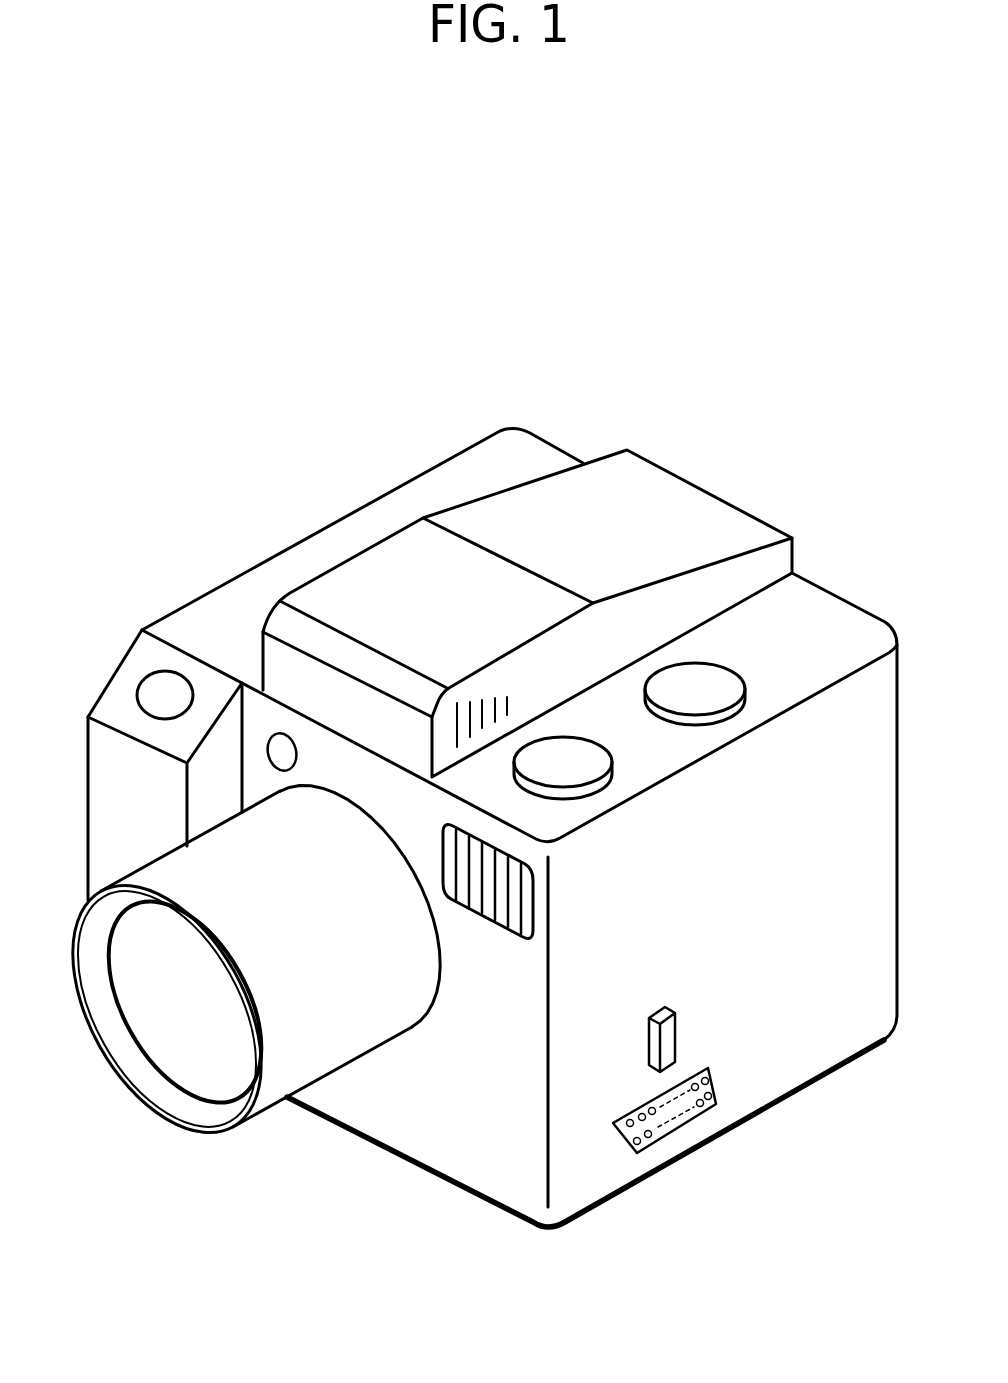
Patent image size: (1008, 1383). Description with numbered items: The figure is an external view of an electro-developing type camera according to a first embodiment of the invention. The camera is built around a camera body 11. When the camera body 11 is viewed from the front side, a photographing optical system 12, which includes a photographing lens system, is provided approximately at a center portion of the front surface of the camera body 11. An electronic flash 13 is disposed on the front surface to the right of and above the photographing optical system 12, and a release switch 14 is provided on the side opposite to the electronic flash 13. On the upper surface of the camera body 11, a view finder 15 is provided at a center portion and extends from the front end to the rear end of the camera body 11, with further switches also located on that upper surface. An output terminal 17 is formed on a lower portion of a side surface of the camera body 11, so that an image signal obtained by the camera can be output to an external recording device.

The camera body 11 is at (419, 1202).
The photographing optical system 12 is at (195, 1053).
The electronic flash 13 is at (512, 897).
The release switch 14 is at (165, 695).
The view finder 15 is at (388, 583).
The output terminal 17 is at (652, 1147).